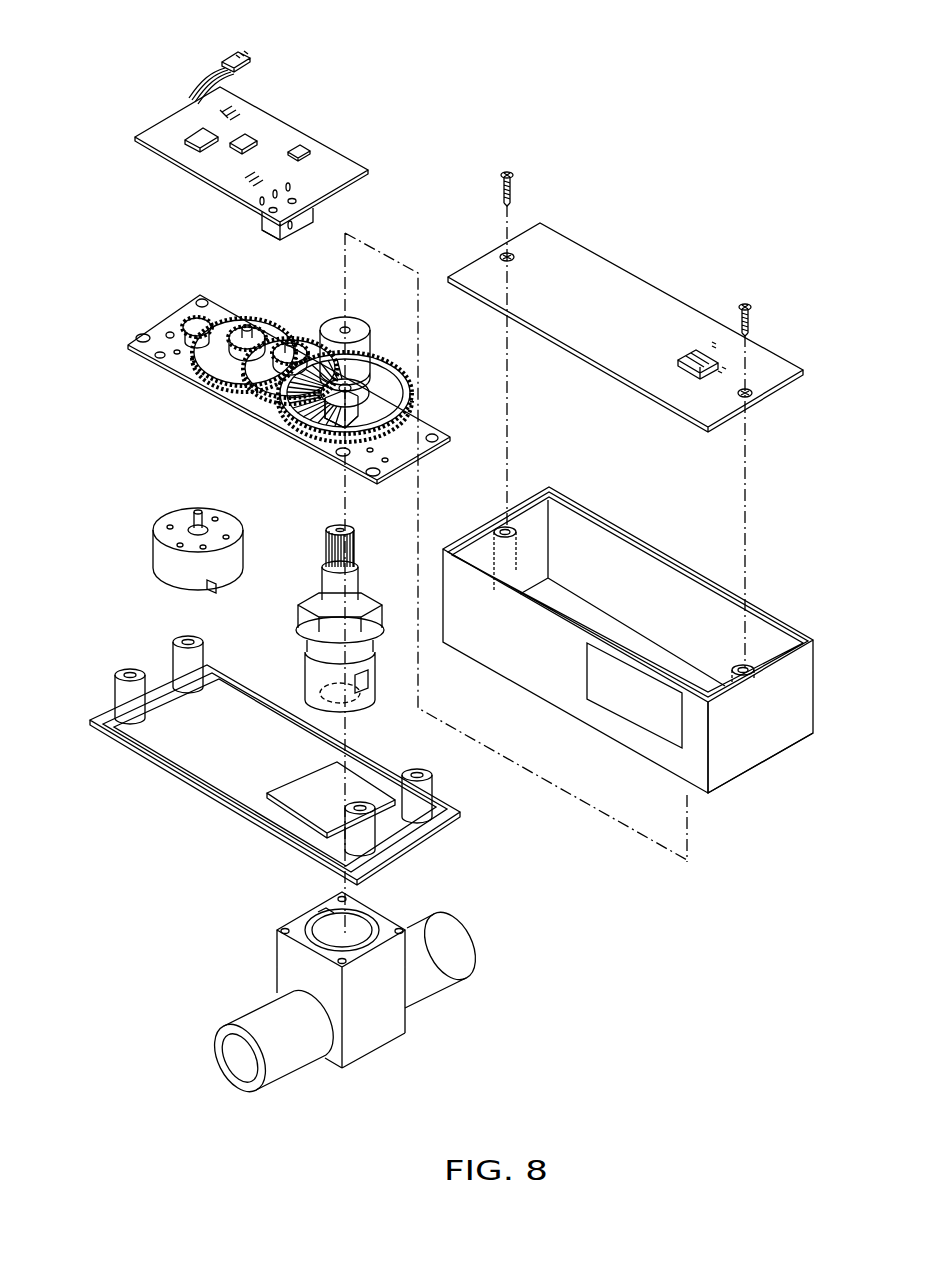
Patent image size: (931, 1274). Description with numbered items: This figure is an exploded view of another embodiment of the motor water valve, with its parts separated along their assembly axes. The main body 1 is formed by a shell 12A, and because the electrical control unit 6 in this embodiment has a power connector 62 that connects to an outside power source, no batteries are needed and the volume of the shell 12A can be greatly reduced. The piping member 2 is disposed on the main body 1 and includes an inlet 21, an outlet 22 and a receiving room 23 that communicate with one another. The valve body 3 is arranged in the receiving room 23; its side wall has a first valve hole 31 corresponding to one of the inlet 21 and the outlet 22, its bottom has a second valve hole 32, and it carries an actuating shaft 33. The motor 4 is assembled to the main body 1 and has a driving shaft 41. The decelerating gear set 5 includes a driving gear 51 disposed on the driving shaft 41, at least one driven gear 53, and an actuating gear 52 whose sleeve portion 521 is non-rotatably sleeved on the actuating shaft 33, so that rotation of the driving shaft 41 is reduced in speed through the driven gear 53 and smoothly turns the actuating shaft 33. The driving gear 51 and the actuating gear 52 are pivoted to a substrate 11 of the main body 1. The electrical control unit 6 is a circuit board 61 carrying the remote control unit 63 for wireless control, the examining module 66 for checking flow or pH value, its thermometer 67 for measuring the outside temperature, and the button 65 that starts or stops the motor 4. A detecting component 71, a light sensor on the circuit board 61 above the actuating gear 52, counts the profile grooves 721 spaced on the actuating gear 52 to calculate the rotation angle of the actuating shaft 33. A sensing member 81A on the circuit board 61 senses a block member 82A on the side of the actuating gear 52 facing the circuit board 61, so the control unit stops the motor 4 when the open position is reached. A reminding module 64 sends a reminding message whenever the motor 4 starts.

The main body 1 is at (628, 712).
The piping member 2 is at (356, 993).
The valve body 3 is at (346, 617).
The motor 4 is at (171, 549).
The decelerating gear set 5 is at (308, 363).
The electrical control unit 6 is at (263, 122).
The substrate 11 is at (178, 368).
The shell 12A is at (738, 750).
The inlet 21 is at (238, 1060).
The outlet 22 is at (460, 938).
The receiving room 23 is at (318, 934).
The first valve hole 31 is at (370, 680).
The second valve hole 32 is at (352, 692).
The actuating shaft 33 is at (332, 547).
The driving shaft 41 is at (195, 522).
The driving gear 51 is at (190, 320).
The actuating gear 52 is at (329, 372).
The driven gear 53 is at (262, 332).
The circuit board 61 is at (290, 140).
The power connector 62 is at (205, 72).
The remote control unit 63 is at (190, 138).
The reminding module 64 is at (660, 732).
The button 65 is at (692, 352).
The examining module 66 is at (247, 136).
The thermometer 67 is at (302, 152).
The detecting component 71 is at (303, 218).
The connector terminal 81A is at (263, 230).
The gear hub coupling 82A is at (352, 418).
The sleeve portion 521 is at (357, 348).
The profile grooves 721 is at (280, 386).